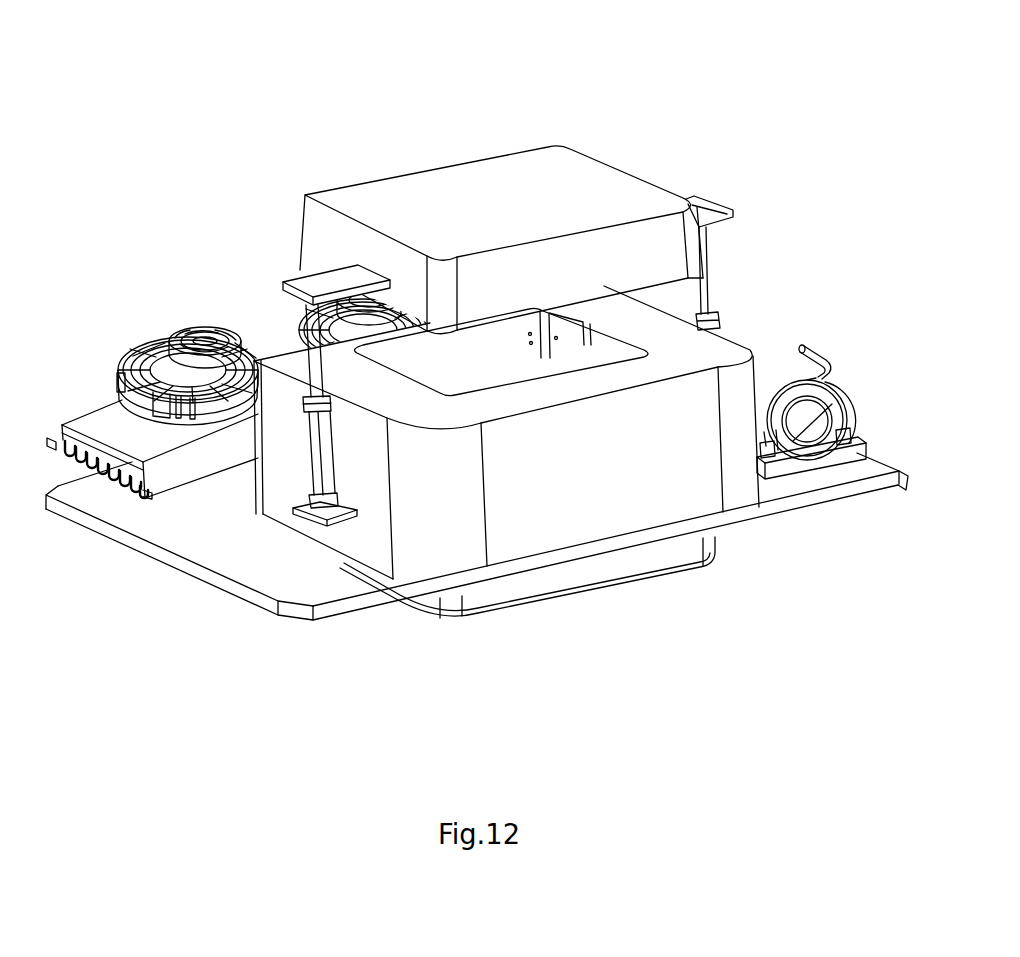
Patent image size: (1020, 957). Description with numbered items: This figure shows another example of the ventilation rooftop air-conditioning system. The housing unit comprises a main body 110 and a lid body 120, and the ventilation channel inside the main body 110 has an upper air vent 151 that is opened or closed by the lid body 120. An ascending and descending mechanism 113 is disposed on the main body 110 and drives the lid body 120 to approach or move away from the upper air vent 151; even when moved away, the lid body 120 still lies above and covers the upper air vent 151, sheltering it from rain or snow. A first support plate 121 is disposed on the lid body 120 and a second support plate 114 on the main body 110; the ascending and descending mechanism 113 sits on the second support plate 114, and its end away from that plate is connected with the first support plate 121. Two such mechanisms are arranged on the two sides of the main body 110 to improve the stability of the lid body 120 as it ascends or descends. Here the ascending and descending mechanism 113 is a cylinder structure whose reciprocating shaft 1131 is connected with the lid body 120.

The main body 110 is at (548, 497).
The ascending and descending mechanism 113 is at (318, 453).
The reciprocating shaft 1131 is at (300, 345).
The second support plate 114 is at (235, 572).
The lid body 120 is at (488, 204).
The first support plate 121 is at (335, 281).
The upper air vent 151 is at (540, 366).